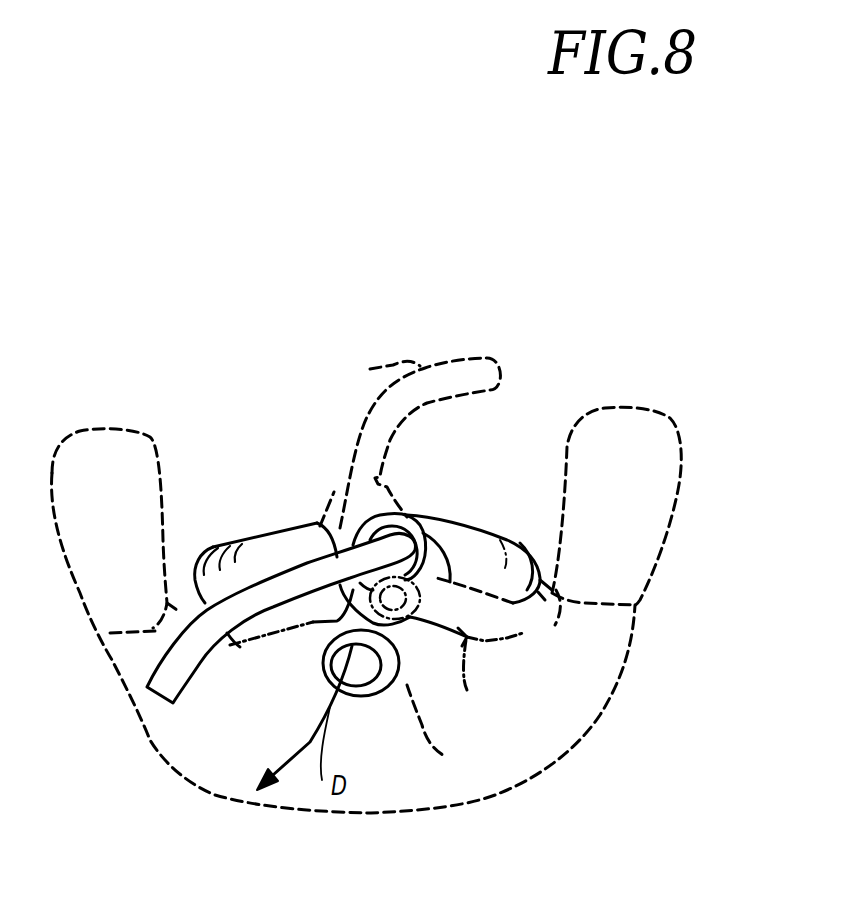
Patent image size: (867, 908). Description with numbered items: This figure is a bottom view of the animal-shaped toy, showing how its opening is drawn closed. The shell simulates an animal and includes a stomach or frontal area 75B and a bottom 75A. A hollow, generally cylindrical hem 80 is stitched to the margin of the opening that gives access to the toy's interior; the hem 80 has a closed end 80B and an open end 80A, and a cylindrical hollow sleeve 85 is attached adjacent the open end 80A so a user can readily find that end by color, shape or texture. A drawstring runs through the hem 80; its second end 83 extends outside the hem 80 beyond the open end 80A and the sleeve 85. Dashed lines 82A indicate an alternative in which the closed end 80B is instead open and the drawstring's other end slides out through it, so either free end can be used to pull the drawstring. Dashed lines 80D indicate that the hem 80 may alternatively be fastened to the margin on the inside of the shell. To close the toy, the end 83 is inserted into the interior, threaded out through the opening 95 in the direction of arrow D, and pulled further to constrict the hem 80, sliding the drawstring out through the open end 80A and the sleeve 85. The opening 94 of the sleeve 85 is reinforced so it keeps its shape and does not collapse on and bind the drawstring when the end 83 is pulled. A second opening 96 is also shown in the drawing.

The bottom 75A is at (343, 643).
The stomach or frontal area 75B is at (366, 530).
The hem 80 is at (298, 523).
The open end 80A is at (462, 557).
The closed end 80B is at (245, 557).
The dashed lines indicating hem on inside of shell 80D is at (467, 690).
The free end of drawstring 82A is at (410, 442).
The second end of drawstring 83 is at (172, 687).
The sleeve 85 is at (440, 543).
The opening 94 is at (405, 517).
The opening 95 is at (333, 648).
The inner button 96 is at (327, 668).